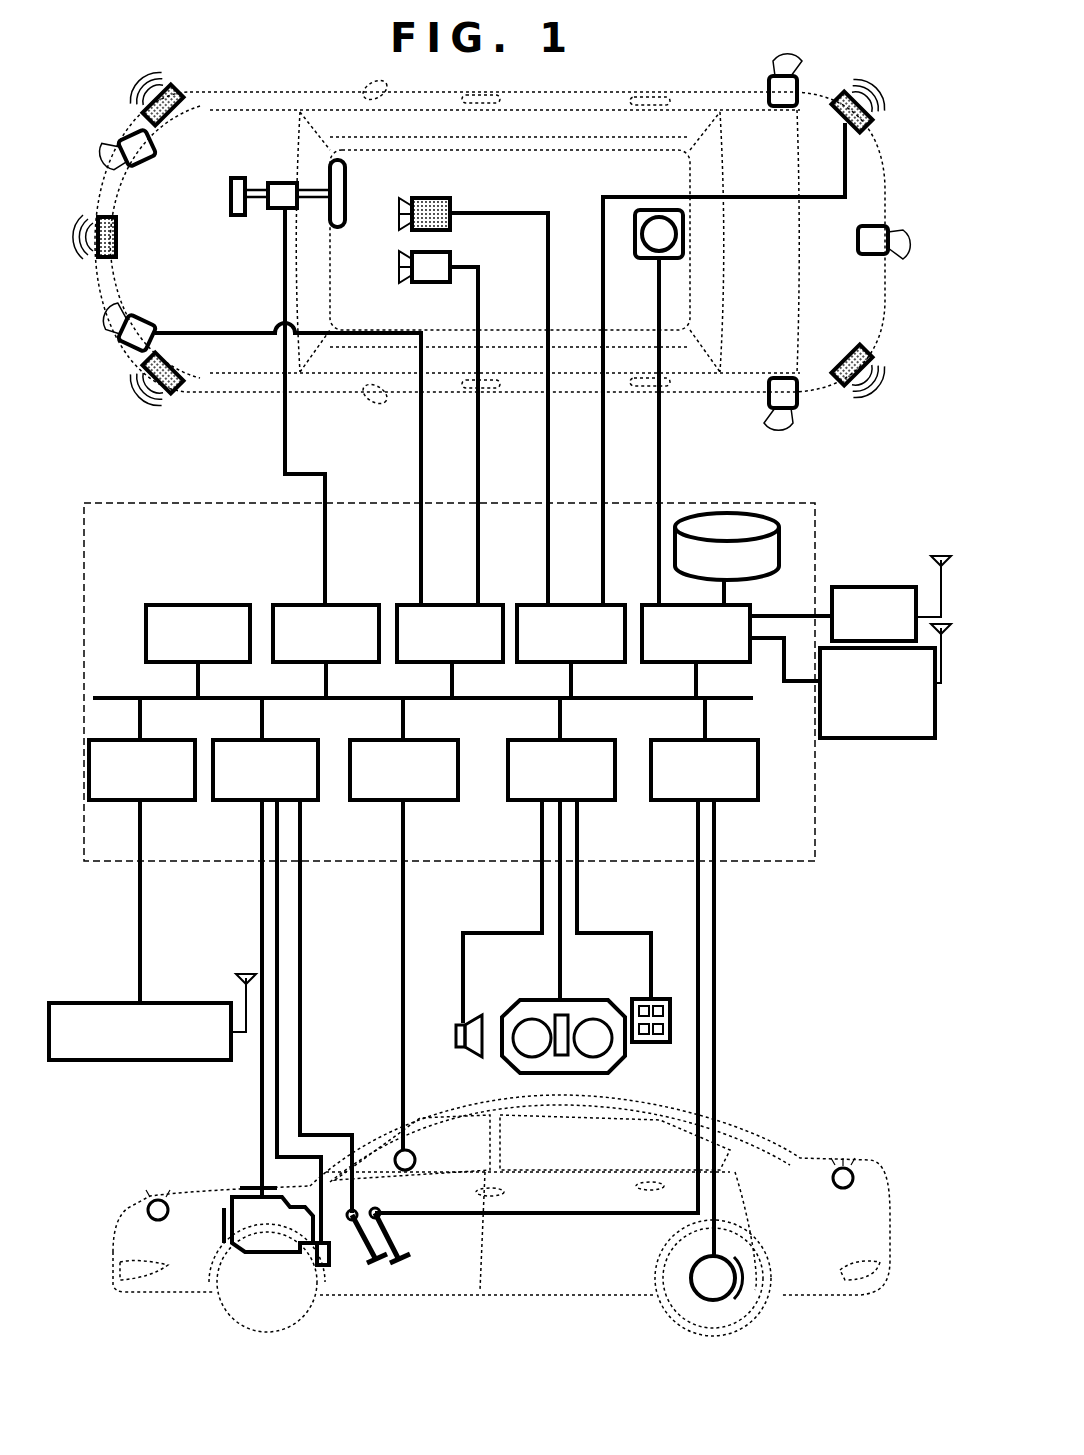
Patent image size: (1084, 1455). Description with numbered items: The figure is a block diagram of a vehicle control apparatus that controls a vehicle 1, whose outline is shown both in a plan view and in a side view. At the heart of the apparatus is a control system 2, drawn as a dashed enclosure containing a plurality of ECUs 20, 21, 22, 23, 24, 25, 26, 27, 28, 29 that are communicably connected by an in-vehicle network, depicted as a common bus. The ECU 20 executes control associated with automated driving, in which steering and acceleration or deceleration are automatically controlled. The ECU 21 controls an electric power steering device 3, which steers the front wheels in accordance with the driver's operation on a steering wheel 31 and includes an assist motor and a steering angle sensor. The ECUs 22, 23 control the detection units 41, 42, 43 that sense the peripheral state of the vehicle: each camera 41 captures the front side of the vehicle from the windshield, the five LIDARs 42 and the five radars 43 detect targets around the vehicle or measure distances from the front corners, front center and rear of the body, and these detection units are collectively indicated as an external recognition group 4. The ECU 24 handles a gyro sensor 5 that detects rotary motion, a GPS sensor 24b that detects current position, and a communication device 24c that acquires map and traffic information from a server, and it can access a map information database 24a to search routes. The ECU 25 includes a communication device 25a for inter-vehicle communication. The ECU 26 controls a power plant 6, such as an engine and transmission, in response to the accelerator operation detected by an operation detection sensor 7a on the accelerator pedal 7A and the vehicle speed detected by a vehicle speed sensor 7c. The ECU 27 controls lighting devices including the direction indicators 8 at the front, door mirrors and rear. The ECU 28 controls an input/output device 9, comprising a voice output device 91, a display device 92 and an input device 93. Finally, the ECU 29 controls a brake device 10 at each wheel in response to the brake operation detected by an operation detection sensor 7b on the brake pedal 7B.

The vehicle 1 is at (890, 153).
The control system 2 is at (790, 862).
The electric power steering device 3 is at (240, 218).
The steering wheel 31 is at (336, 229).
The external environment recognition unit 4 is at (126, 97).
The camera 41 is at (455, 226).
The LIDAR 42 is at (146, 168).
The millimeter wave radar 43 is at (176, 92).
The gyro sensor 5 is at (690, 240).
The power plant 6 is at (240, 1186).
The accelerator pedal 7A is at (382, 1262).
The brake pedal 7B is at (405, 1250).
The operation detection sensor 7a is at (356, 1180).
The operation detection sensor 7b is at (385, 1208).
The vehicle speed sensor 7c is at (320, 1268).
The direction indicator 8 is at (150, 1204).
The input/output device 9 is at (494, 1077).
The voice output device 91 is at (456, 1030).
The display device 92 is at (520, 1012).
The input device 93 is at (655, 1044).
The brake device 10 is at (720, 1302).
The ECU 20 is at (237, 605).
The ECU 21 is at (362, 605).
The ECU 22 is at (452, 605).
The ECU 23 is at (576, 605).
The ECU 24 is at (642, 605).
The map information database 24a is at (722, 512).
The GPS sensor 24b is at (887, 586).
The communication device 24c is at (879, 739).
The ECU 25 is at (170, 801).
The communication device 25a is at (133, 1061).
The ECU 26 is at (240, 801).
The ECU 27 is at (445, 801).
The ECU 28 is at (600, 801).
The ECU 29 is at (740, 801).